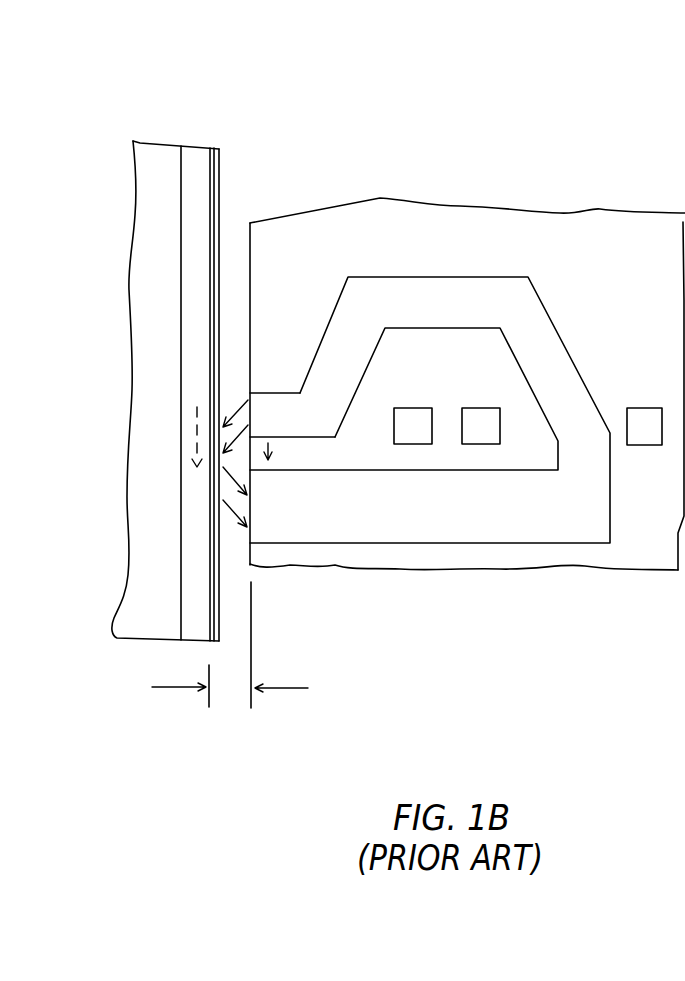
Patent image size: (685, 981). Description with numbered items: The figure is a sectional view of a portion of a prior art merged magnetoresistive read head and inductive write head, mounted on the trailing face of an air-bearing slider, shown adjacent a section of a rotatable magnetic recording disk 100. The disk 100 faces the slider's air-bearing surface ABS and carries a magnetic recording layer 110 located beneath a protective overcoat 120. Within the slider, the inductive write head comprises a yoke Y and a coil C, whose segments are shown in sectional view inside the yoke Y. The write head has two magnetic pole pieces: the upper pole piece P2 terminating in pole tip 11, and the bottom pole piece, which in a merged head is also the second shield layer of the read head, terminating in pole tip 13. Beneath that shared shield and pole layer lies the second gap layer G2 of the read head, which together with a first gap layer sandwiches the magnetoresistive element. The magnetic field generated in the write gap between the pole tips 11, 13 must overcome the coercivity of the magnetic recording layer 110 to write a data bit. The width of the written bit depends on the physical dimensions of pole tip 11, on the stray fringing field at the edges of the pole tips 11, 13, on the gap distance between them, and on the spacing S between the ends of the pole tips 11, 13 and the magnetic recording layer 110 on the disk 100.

The disk 100 is at (155, 163).
The magnetic recording layer 110 is at (200, 162).
The protective overcoat 120 is at (217, 150).
The air-bearing surface ABS is at (252, 255).
The write head pole tip 11 is at (280, 417).
The second pole piece P2 is at (420, 308).
The yoke Y is at (574, 430).
The coil C is at (415, 427).
The write head pole tip 13 is at (280, 520).
The second gap layer G2 is at (573, 555).
The spacing S is at (230, 645).